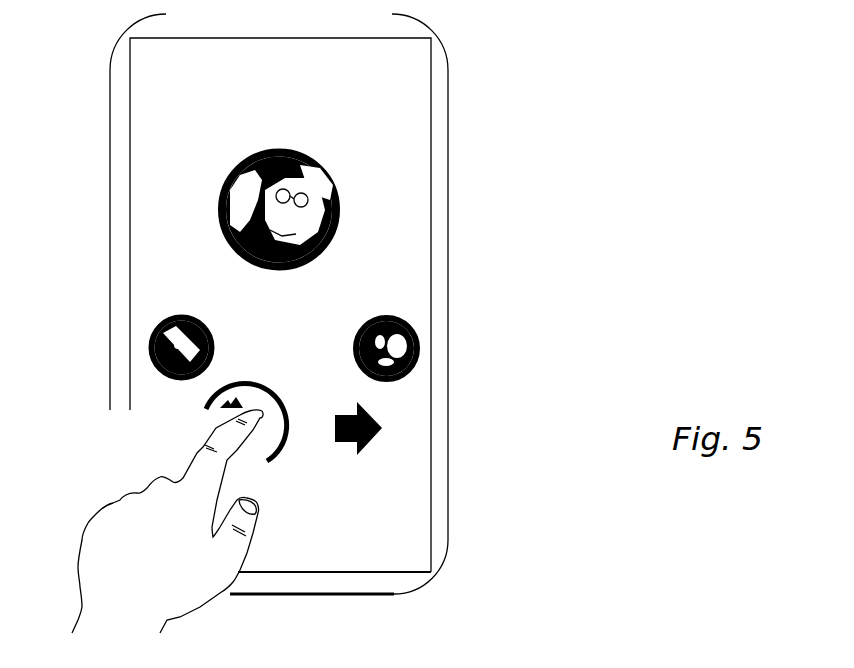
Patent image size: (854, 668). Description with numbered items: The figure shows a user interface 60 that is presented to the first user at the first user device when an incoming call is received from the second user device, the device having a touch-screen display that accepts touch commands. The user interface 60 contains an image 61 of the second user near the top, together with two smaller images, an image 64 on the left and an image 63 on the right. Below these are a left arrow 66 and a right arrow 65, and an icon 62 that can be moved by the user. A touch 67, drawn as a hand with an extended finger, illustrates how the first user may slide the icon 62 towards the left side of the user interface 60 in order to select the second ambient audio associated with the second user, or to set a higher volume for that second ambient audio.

The user interface 60 is at (535, 553).
The image 61 is at (335, 183).
The icon 62 is at (287, 453).
The image 63 is at (352, 344).
The image 64 is at (208, 337).
The right arrow 65 is at (370, 443).
The left arrow 66 is at (189, 395).
The touch 67 is at (68, 537).